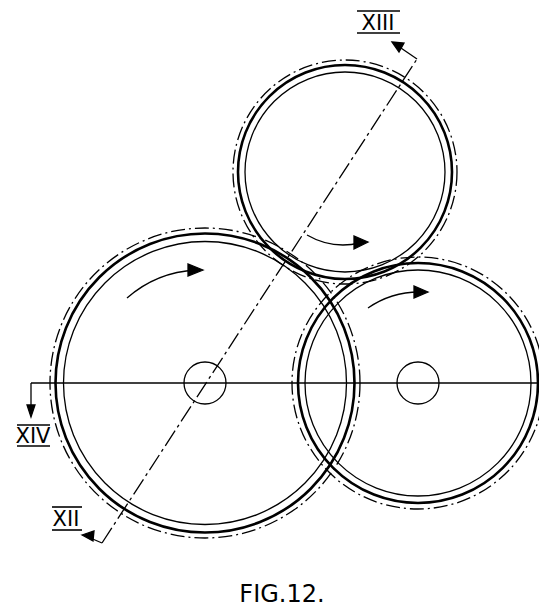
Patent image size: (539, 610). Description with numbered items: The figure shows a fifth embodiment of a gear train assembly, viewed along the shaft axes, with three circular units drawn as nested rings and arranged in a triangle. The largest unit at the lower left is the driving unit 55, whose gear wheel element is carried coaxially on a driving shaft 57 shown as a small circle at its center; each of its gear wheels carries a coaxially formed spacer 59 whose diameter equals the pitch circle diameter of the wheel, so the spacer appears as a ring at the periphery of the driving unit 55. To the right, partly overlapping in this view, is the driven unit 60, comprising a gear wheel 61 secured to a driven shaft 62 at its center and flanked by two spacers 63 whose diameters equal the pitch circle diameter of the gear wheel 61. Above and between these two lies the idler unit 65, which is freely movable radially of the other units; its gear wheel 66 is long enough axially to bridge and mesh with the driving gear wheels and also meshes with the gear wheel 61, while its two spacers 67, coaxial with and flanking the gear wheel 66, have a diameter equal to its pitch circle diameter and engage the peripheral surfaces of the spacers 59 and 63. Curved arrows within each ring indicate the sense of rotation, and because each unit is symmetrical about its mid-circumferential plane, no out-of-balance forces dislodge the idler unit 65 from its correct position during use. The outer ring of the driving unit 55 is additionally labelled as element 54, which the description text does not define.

The first cylinder outline 54 is at (137, 242).
The first cylinder body 55 is at (193, 497).
The first cylinder shaft 57 is at (205, 397).
The first cylinder peripheral surface 59 is at (73, 311).
The second cylinder body 60 is at (465, 465).
The second cylinder outline 61 is at (493, 274).
The second cylinder shaft 62 is at (418, 390).
The second cylinder peripheral surface 63 is at (510, 308).
The third cylinder body 65 is at (412, 120).
The third cylinder outline 66 is at (447, 130).
The third cylinder peripheral surface 67 is at (260, 108).